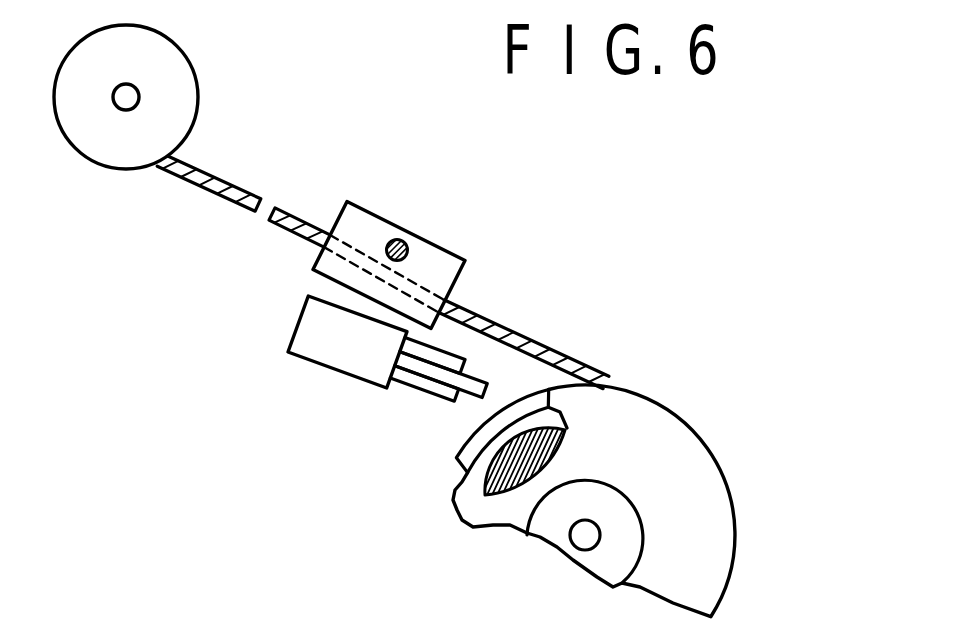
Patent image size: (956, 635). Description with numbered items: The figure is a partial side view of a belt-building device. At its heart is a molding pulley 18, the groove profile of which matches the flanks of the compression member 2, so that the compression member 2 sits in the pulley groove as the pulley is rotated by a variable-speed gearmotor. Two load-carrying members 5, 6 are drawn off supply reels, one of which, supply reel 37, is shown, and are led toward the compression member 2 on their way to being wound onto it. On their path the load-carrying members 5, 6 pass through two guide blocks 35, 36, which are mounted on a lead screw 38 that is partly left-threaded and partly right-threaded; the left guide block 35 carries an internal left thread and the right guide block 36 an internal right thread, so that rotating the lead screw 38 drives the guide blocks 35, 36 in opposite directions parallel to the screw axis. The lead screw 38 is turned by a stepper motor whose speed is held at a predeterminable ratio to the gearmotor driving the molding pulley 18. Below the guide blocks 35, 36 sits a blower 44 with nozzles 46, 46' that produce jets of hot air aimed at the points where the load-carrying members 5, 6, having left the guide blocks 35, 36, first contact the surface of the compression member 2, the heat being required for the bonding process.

The compression member 2 is at (455, 485).
The load-carrying member 5 is at (214, 191).
The load-carrying member 6 is at (439, 298).
The molding pulley 18 is at (690, 477).
The left guide block 35 is at (432, 262).
The right guide block 36 is at (472, 277).
The supply reel 37 is at (181, 67).
The lead screw 38 is at (398, 239).
The blower 44 is at (336, 343).
The nozzle 46 is at (402, 389).
The nozzle 46' is at (441, 396).